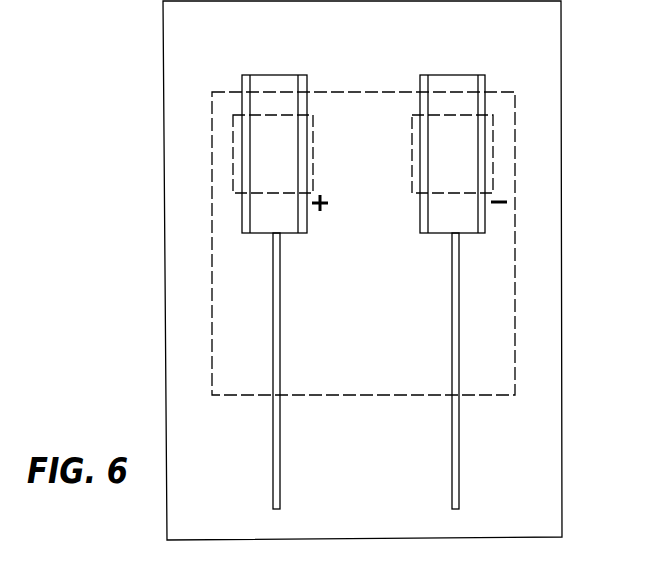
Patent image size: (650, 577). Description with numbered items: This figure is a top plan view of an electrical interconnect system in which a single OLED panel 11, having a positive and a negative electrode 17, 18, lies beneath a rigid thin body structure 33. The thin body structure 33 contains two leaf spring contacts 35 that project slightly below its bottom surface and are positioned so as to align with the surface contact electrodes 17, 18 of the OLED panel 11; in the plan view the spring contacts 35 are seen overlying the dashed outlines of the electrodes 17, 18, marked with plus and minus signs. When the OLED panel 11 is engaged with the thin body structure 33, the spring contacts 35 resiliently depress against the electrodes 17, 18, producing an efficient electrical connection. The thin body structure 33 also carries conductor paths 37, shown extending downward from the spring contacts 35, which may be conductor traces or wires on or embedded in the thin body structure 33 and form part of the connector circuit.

The rigid thin body structure 33 is at (563, 103).
The OLED panel 11 is at (212, 283).
The leaf spring contacts 35 is at (285, 74).
The electrode 17 is at (235, 152).
The electrode 18 is at (493, 155).
The conductor paths 37 is at (282, 487).